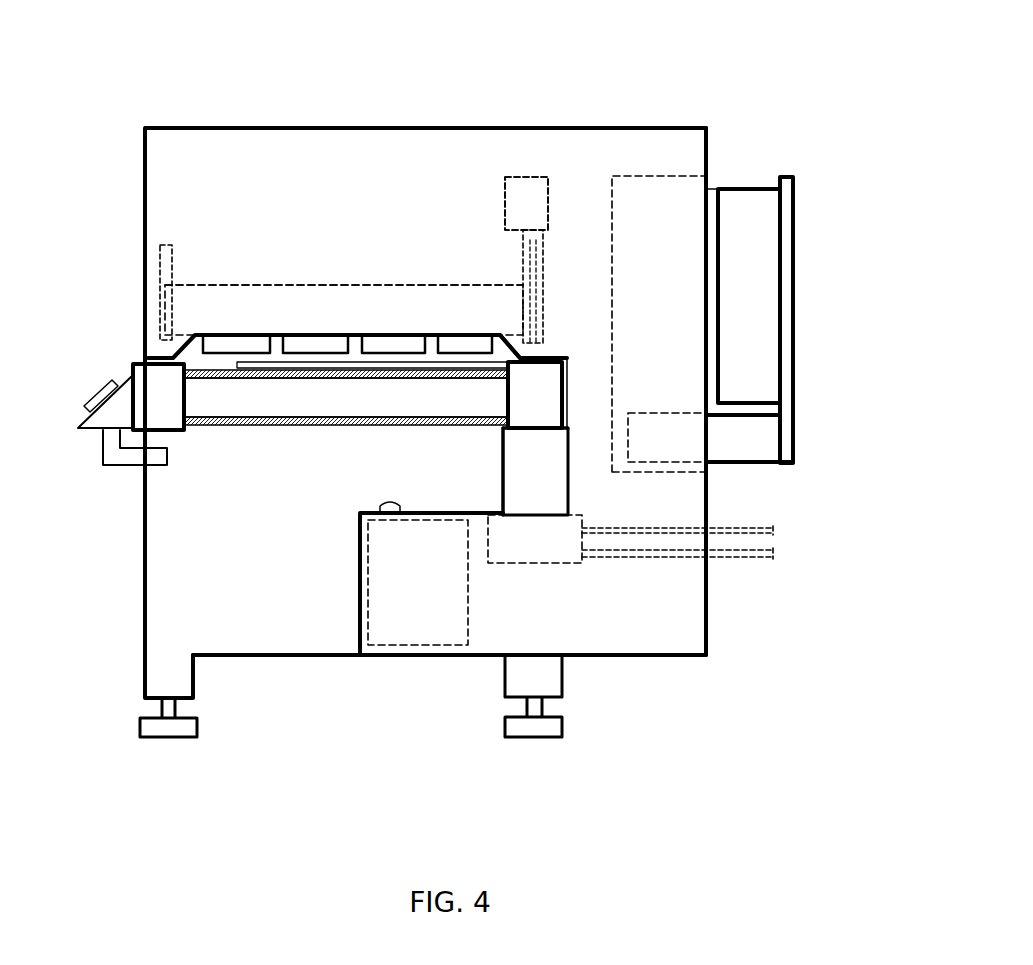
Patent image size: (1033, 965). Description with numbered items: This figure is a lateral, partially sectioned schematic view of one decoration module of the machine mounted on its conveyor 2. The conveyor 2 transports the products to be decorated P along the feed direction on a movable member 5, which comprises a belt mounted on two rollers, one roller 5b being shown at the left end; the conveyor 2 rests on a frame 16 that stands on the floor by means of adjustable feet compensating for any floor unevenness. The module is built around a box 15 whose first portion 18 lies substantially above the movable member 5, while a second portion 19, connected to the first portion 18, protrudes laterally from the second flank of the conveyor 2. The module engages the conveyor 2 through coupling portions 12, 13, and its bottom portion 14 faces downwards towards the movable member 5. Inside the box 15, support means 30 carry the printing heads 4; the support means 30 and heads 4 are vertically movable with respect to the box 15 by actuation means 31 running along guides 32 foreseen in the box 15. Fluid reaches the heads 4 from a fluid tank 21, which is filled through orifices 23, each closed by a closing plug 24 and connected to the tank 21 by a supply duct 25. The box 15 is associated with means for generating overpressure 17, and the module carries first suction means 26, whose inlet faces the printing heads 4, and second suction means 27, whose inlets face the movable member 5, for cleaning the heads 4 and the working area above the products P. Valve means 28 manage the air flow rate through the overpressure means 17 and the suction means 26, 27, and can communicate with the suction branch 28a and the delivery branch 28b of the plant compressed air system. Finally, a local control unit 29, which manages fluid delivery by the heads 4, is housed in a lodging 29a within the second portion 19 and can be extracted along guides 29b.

The conveyor 2 is at (153, 616).
The printing heads 4 is at (315, 345).
The movable member 5 is at (260, 436).
The roller 5b is at (208, 395).
The products to be decorated P is at (330, 375).
The coupling portion 12 is at (148, 357).
The coupling portion 13 is at (552, 350).
The bottom portion 14 is at (210, 322).
The box 15 is at (435, 124).
The frame 16 is at (240, 640).
The means for generating overpressure 17 is at (532, 496).
The first portion 18 is at (240, 153).
The second portion 19 is at (653, 153).
The fluid tank 21 is at (407, 647).
The orifices 23 is at (102, 385).
The closing plug 24 is at (85, 403).
The supply duct 25 is at (132, 457).
The first suction means 26 is at (552, 495).
The second suction means 27 is at (553, 466).
The valve means 28 is at (527, 567).
The suction branch 28a is at (775, 530).
The delivery branch 28b is at (775, 553).
The local control unit 29 is at (745, 207).
The lodging 29a is at (620, 207).
The guides 29b is at (677, 445).
The support means 30 is at (323, 283).
The actuation means 31 is at (525, 177).
The guides 32 is at (158, 240).